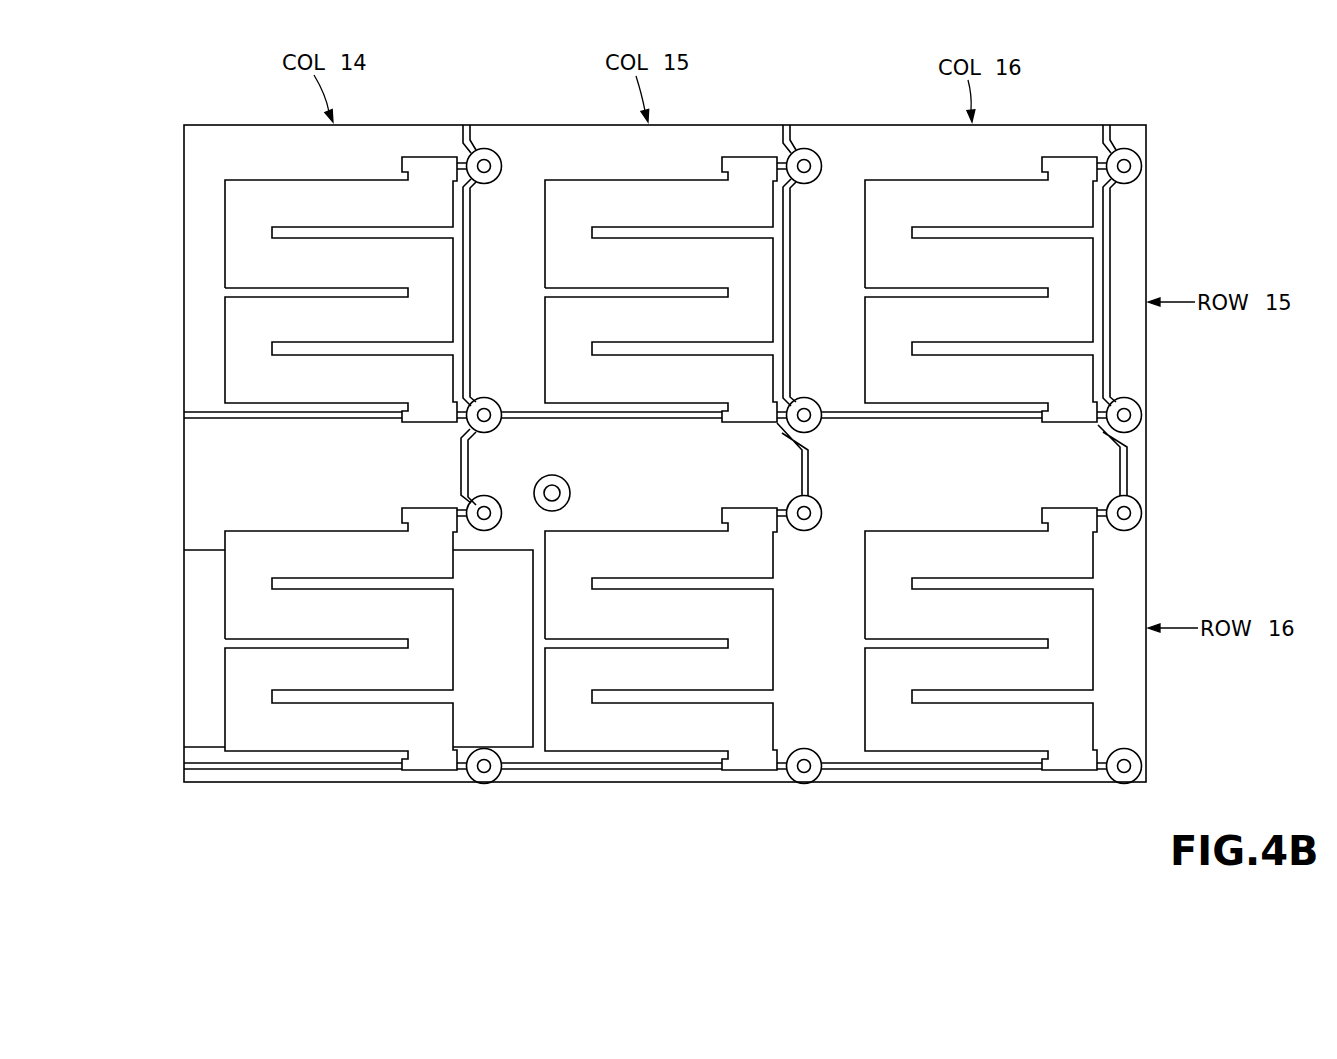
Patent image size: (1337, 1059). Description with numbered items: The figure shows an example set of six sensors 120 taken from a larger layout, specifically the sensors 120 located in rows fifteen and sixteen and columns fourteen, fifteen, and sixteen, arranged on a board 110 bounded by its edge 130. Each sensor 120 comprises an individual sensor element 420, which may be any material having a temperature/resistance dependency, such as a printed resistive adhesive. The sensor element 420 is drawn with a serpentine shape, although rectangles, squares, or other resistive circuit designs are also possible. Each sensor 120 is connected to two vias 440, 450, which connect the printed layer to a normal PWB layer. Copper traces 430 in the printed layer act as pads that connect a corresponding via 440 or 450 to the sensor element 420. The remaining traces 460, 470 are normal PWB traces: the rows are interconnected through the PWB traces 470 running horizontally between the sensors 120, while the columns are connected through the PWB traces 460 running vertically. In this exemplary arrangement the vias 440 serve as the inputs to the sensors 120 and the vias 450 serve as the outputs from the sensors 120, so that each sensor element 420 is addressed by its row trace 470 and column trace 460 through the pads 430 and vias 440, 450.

The sensor array substrate 110 is at (674, 423).
The sensor 120 is at (392, 132).
The substrate edge 130 is at (185, 455).
The sensor element 420 is at (600, 203).
The copper trace 430 is at (1113, 402).
The via 440 is at (1124, 415).
The via 450 is at (1124, 166).
The PWB trace 460 is at (1105, 133).
The PWB trace 470 is at (358, 766).